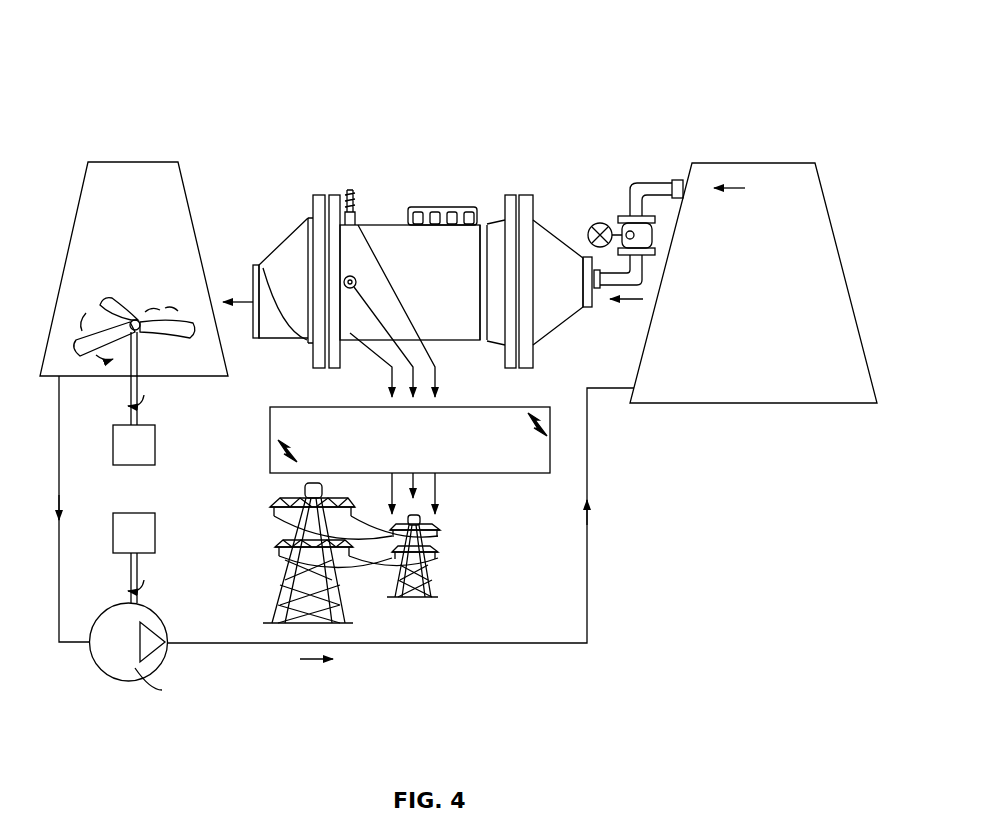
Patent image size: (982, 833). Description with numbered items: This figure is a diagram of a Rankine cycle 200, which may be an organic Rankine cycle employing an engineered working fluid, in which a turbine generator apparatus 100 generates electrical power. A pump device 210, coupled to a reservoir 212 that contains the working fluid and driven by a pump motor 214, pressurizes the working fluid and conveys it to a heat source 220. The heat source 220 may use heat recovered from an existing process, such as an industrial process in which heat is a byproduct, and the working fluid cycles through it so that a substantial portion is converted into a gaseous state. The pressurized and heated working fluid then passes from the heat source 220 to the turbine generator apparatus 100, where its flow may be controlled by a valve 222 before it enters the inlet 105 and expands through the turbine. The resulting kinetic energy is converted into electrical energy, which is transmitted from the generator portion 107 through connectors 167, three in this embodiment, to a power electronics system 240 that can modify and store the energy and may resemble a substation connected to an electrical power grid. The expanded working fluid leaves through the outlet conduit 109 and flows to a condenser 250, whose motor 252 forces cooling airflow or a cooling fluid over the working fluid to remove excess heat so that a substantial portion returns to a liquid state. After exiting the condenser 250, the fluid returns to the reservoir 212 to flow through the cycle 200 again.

The Rankine cycle 200 is at (128, 30).
The turbine generator apparatus 100 is at (422, 265).
The turbine inlet 105 is at (549, 246).
The generator terminal box 107 is at (430, 235).
The outlet conduit 109 is at (284, 255).
The connectors 167 is at (349, 190).
The pump device 210 is at (145, 675).
The reservoir 212 is at (103, 660).
The pump motor 214 is at (155, 530).
The heat source 220 is at (808, 178).
The valve 222 is at (601, 222).
The power electronics system 240 is at (264, 422).
The condenser 250 is at (123, 154).
The motor 252 is at (155, 443).